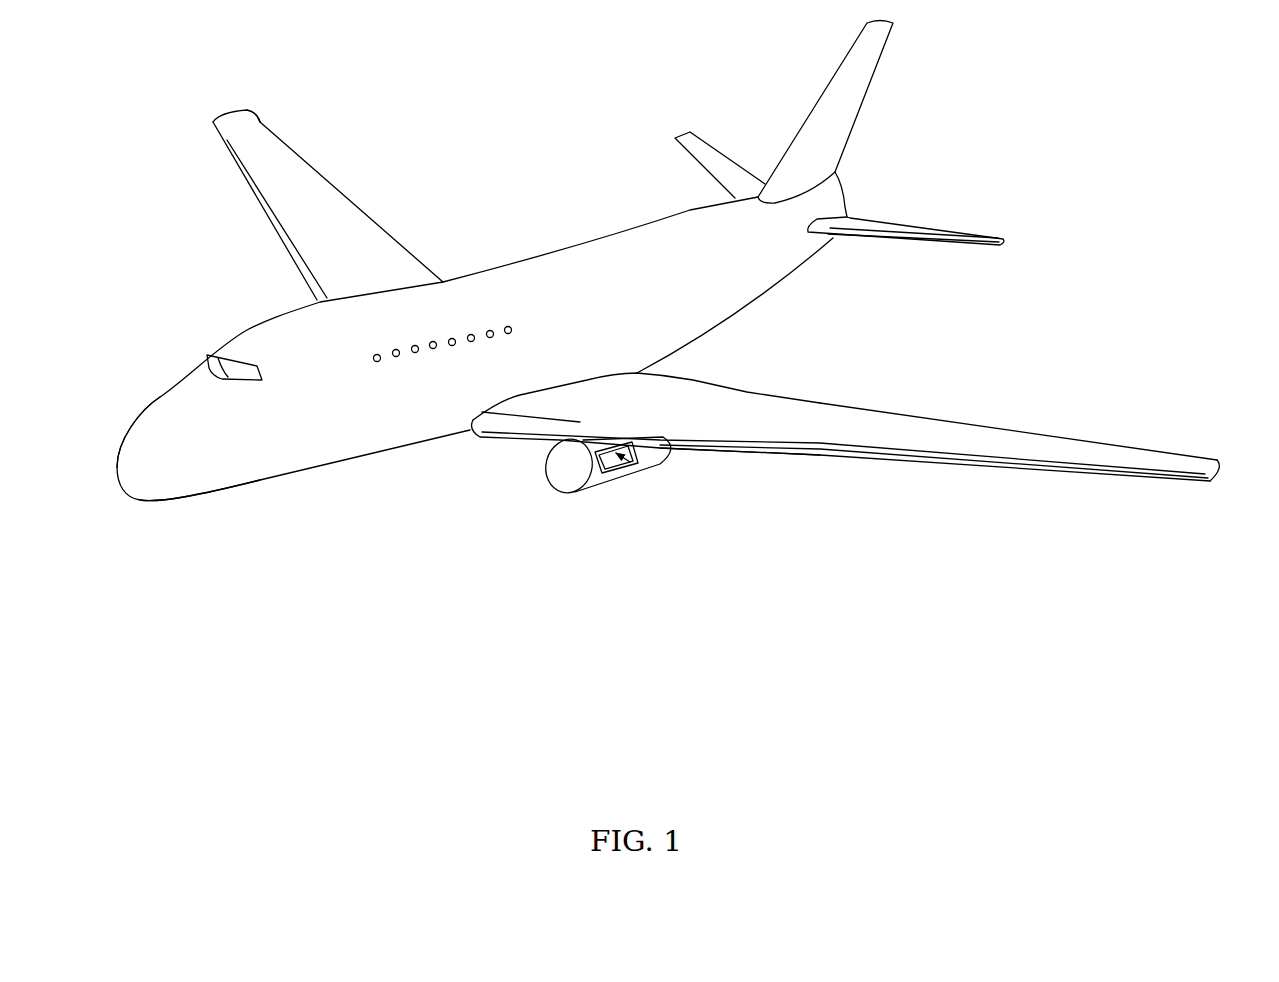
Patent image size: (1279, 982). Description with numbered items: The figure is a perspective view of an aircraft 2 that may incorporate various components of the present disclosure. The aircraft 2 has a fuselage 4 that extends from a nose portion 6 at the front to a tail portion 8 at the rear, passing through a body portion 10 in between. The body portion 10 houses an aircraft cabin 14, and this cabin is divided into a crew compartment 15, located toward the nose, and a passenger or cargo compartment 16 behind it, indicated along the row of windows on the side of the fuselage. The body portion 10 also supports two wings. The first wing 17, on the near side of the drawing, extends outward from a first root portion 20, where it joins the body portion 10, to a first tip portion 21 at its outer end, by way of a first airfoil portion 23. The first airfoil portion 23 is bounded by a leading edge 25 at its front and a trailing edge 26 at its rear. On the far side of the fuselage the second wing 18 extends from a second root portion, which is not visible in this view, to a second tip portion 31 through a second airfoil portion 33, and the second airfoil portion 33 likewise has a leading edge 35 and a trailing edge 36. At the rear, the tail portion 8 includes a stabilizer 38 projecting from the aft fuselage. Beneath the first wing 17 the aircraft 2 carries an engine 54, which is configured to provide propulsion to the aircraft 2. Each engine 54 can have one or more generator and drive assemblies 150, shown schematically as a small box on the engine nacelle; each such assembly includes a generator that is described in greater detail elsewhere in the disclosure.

The aircraft 2 is at (108, 328).
The fuselage 4 is at (270, 477).
The nose portion 6 is at (117, 480).
The tail portion 8 is at (793, 258).
The body portion 10 is at (677, 337).
The aircraft cabin 14 is at (483, 377).
The crew compartment 15 is at (207, 352).
The passenger or cargo compartment 16 is at (516, 290).
The first wing 17 is at (865, 457).
The second wing 18 is at (263, 119).
The first root portion 20 is at (577, 392).
The first tip portion 21 is at (1222, 475).
The first airfoil portion 23 is at (750, 393).
The leading edge 25 is at (672, 447).
The trailing edge 26 is at (890, 412).
The second tip portion 31 is at (223, 112).
The second airfoil portion 33 is at (287, 157).
The leading edge 35 is at (227, 147).
The trailing edge 36 is at (310, 160).
The stabilizer 38 is at (887, 209).
The engine 54 is at (545, 465).
The generator and drive assembly 150 is at (640, 462).